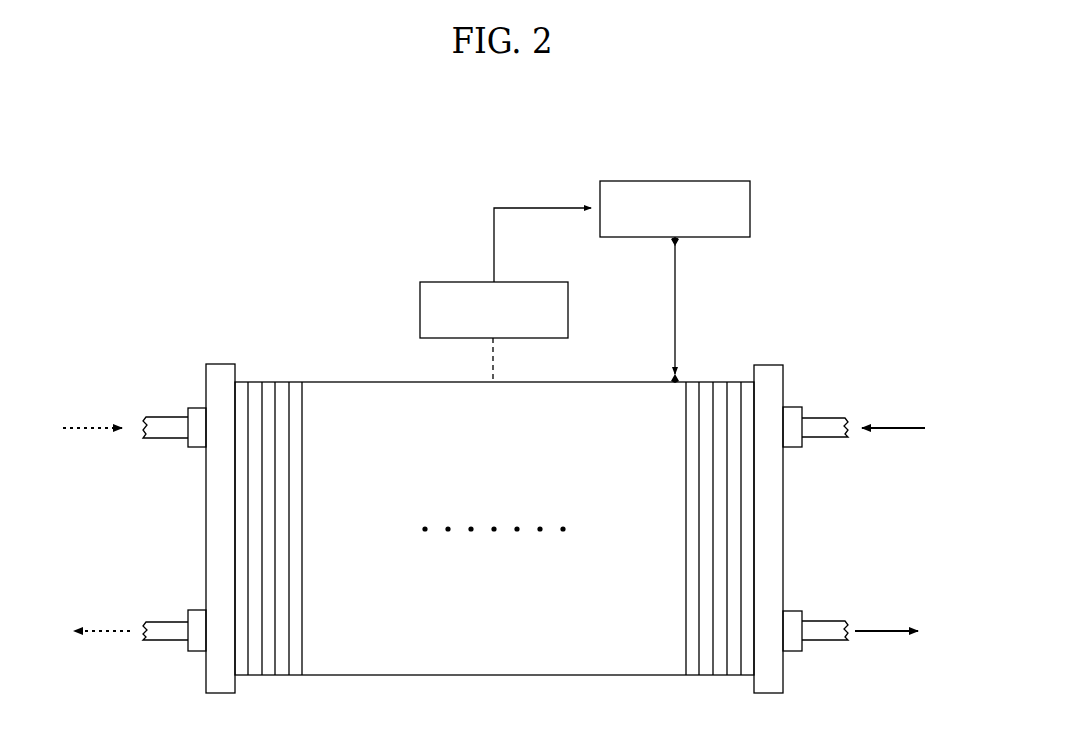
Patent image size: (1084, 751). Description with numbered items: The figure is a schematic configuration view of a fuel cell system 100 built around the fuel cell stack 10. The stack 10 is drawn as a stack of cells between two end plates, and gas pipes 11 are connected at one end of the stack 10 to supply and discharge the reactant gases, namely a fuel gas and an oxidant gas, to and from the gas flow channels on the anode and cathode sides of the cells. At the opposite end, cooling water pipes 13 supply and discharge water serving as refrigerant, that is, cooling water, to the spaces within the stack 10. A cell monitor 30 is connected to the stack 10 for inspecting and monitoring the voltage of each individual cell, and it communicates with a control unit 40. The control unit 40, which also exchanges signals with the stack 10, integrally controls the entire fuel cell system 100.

The fuel cell system 100 is at (820, 277).
The fuel cell stack 10 is at (281, 380).
The gas pipes 11 is at (829, 417).
The cooling water pipes 13 is at (160, 417).
The cell monitor 30 is at (426, 280).
The control unit 40 is at (632, 181).